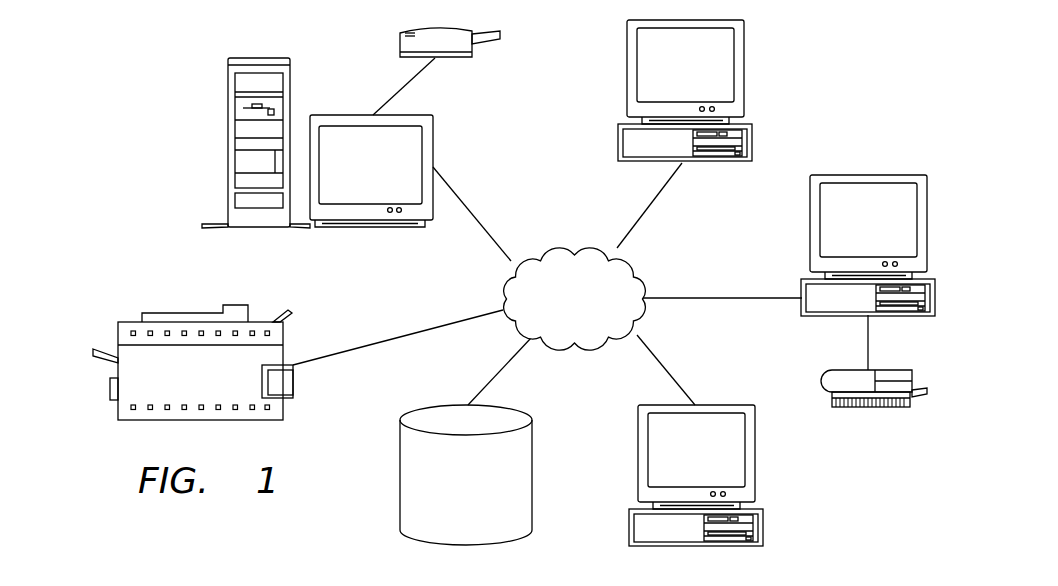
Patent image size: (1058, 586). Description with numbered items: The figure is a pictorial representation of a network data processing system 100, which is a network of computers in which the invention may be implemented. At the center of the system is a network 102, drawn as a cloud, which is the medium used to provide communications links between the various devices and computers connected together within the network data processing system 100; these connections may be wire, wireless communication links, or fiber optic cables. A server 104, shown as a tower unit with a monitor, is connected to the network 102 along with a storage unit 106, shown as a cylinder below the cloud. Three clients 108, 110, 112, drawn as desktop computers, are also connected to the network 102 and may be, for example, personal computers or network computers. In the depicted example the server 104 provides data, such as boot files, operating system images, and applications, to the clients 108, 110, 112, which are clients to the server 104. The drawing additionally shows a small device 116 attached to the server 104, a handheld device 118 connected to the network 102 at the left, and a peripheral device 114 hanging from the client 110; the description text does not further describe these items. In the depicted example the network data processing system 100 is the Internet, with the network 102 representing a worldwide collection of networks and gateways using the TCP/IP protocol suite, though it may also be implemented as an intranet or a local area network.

The network data processing system 100 is at (862, 80).
The network 102 is at (597, 311).
The server 104 is at (392, 174).
The storage unit 106 is at (487, 493).
The client 108 is at (707, 78).
The client 110 is at (888, 233).
The client 112 is at (717, 465).
The peripheral device 114 is at (868, 407).
The peripheral device 116 is at (400, 40).
The personal digital assistant 118 is at (218, 386).